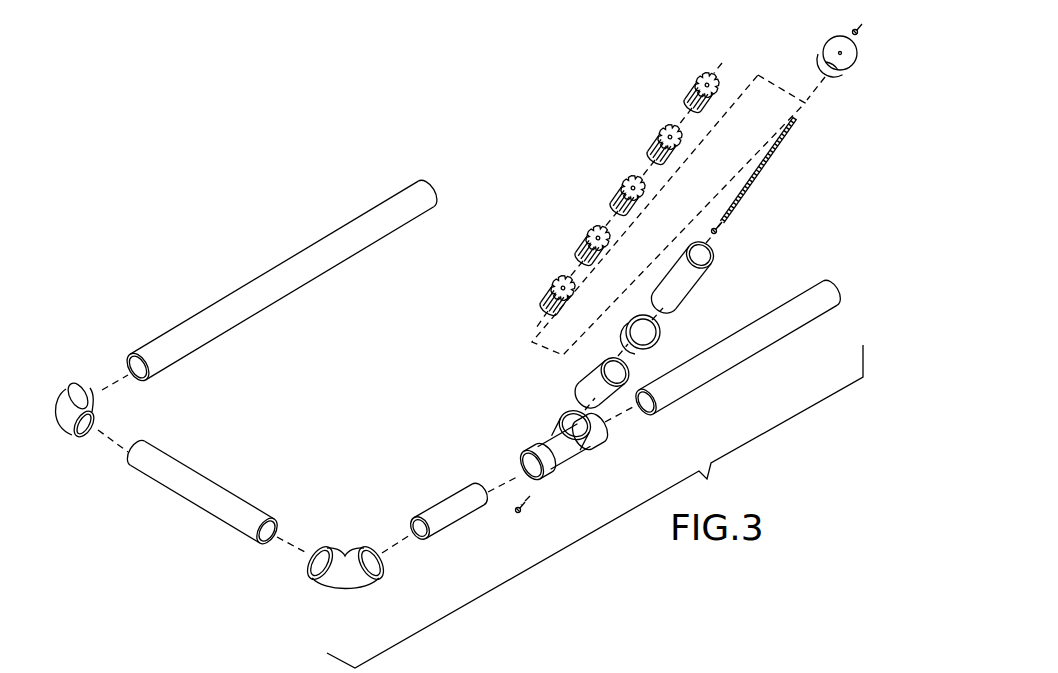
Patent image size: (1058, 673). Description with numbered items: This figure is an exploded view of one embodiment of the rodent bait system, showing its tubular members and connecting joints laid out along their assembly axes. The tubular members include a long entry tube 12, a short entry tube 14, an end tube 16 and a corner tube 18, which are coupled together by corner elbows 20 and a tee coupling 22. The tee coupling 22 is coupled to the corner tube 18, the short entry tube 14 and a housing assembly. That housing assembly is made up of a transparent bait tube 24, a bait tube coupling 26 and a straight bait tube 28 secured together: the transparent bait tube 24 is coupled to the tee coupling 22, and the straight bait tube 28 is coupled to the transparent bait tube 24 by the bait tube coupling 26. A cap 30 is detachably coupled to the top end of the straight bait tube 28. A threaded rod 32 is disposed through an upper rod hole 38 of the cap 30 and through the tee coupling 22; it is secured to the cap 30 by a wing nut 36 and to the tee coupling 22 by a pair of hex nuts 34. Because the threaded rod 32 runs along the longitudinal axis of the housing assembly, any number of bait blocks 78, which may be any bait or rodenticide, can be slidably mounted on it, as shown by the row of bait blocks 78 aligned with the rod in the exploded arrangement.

The long entry tube 12 is at (383, 244).
The short entry tube 14 is at (695, 383).
The end tube 16 is at (230, 498).
The corner tube 18 is at (450, 522).
The corner elbows 20 is at (95, 403).
The tee coupling 22 is at (529, 448).
The transparent bait tube 24 is at (596, 384).
The bait tube coupling 26 is at (662, 343).
The straight bait tube 28 is at (692, 284).
The cap 30 is at (833, 74).
The threaded rod 32 is at (765, 165).
The hex nuts 34 is at (716, 236).
The wing nut 36 is at (854, 28).
The upper rod hole 38 is at (828, 46).
The bait blocks 78 is at (693, 92).